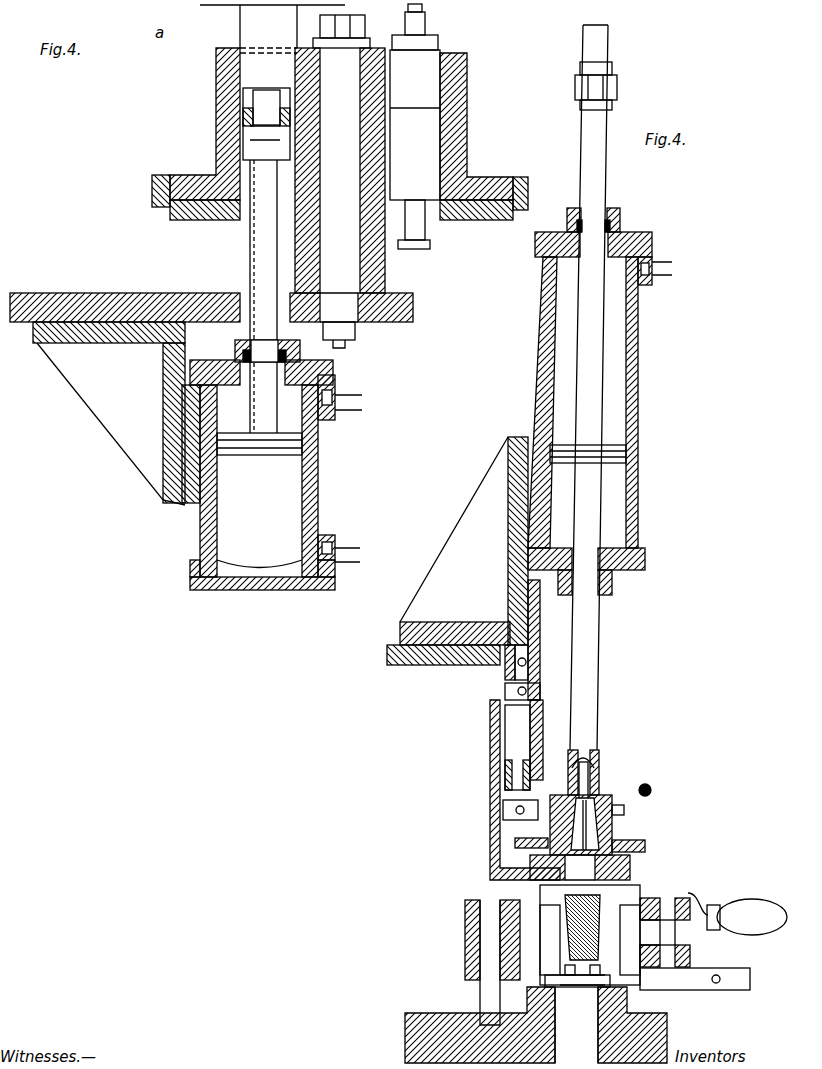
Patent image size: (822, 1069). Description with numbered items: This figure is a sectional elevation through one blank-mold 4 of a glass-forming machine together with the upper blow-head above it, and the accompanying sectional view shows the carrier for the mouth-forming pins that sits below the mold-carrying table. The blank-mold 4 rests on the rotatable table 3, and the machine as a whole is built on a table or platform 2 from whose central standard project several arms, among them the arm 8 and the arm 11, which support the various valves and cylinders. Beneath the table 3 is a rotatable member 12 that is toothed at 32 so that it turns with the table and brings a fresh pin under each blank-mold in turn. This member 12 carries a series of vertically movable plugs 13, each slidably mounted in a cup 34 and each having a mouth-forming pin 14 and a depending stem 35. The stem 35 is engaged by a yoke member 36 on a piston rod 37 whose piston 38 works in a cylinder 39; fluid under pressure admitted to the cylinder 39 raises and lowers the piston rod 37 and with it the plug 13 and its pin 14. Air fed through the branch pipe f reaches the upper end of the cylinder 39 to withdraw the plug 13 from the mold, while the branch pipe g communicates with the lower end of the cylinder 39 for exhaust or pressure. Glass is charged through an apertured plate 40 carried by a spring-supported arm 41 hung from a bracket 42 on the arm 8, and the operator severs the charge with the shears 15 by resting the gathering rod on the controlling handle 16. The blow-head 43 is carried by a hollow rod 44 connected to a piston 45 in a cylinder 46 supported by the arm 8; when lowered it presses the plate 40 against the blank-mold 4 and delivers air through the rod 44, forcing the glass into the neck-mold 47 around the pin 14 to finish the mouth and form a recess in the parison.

In FIG. 4A, the table or platform 2 is at (413, 312).
In FIG. 4, the table 3 is at (445, 1030).
In FIG. 4, the blank-mold 4 is at (640, 900).
In FIG. 4, the arm or bracket 8 is at (440, 656).
In FIG. 4, the arm or bracket 11 is at (592, 961).
In FIG. 4A, the rotatable member 12 is at (396, 154).
In FIG. 4A, the plug 13 is at (340, 129).
In FIG. 4, the plug 13 is at (576, 1025).
In FIG. 4A, the mouth-forming pin 14 is at (425, 26).
In FIG. 4, the shears 15 is at (645, 846).
In FIG. 4, the controlling handle 16 is at (651, 786).
In FIG. 4A, the teeth 32 is at (152, 195).
In FIG. 4A, the cup 34 is at (240, 100).
In FIG. 4A, the depending stem 35 is at (258, 110).
In FIG. 4A, the yoke member 36 is at (250, 145).
In FIG. 4A, the piston rod 37 is at (260, 252).
In FIG. 4A, the piston 38 is at (272, 455).
In FIG. 4A, the cylinder 39 is at (320, 490).
In FIG. 4, the apertured plate 40 is at (630, 867).
In FIG. 4, the spring-supported arm 41 is at (495, 767).
In FIG. 4, the bracket 42 is at (528, 676).
In FIG. 4, the blow-head 43 is at (612, 825).
In FIG. 4, the rod 44 is at (598, 730).
In FIG. 4, the piston 45 is at (626, 450).
In FIG. 4, the cylinder 46 is at (628, 345).
In FIG. 4, the neck-mold 47 is at (577, 991).
In FIG. 4A, the pipe branch f is at (340, 408).
In FIG. 4A, the pipe branch g is at (339, 560).